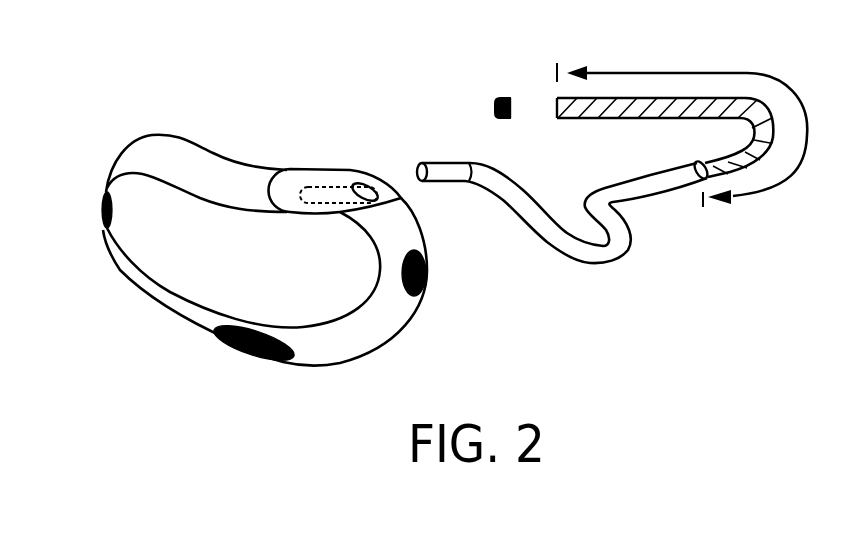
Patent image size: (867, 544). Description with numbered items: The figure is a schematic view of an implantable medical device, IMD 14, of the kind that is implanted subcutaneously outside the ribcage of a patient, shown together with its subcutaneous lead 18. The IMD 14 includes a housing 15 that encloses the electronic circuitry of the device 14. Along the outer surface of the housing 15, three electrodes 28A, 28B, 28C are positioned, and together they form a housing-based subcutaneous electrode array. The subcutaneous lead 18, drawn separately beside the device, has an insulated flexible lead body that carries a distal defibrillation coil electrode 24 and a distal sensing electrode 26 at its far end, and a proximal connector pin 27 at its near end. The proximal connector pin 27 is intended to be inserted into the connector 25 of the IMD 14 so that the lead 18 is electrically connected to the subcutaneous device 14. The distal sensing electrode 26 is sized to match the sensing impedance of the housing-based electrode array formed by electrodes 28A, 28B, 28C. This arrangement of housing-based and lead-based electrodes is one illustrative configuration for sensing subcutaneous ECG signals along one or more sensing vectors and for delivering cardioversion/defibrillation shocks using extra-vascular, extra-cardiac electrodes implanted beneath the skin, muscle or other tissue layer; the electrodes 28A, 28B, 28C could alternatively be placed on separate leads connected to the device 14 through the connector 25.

The implantable medical device 14 is at (163, 396).
The housing 15 is at (380, 347).
The subcutaneous lead 18 is at (680, 229).
The distal defibrillation coil electrode 24 is at (695, 72).
The connector 25 is at (353, 170).
The distal sensing electrode 26 is at (493, 108).
The proximal connector pin 27 is at (450, 182).
The electrode 28A is at (101, 212).
The electrode 28B is at (262, 357).
The electrode 28C is at (427, 274).